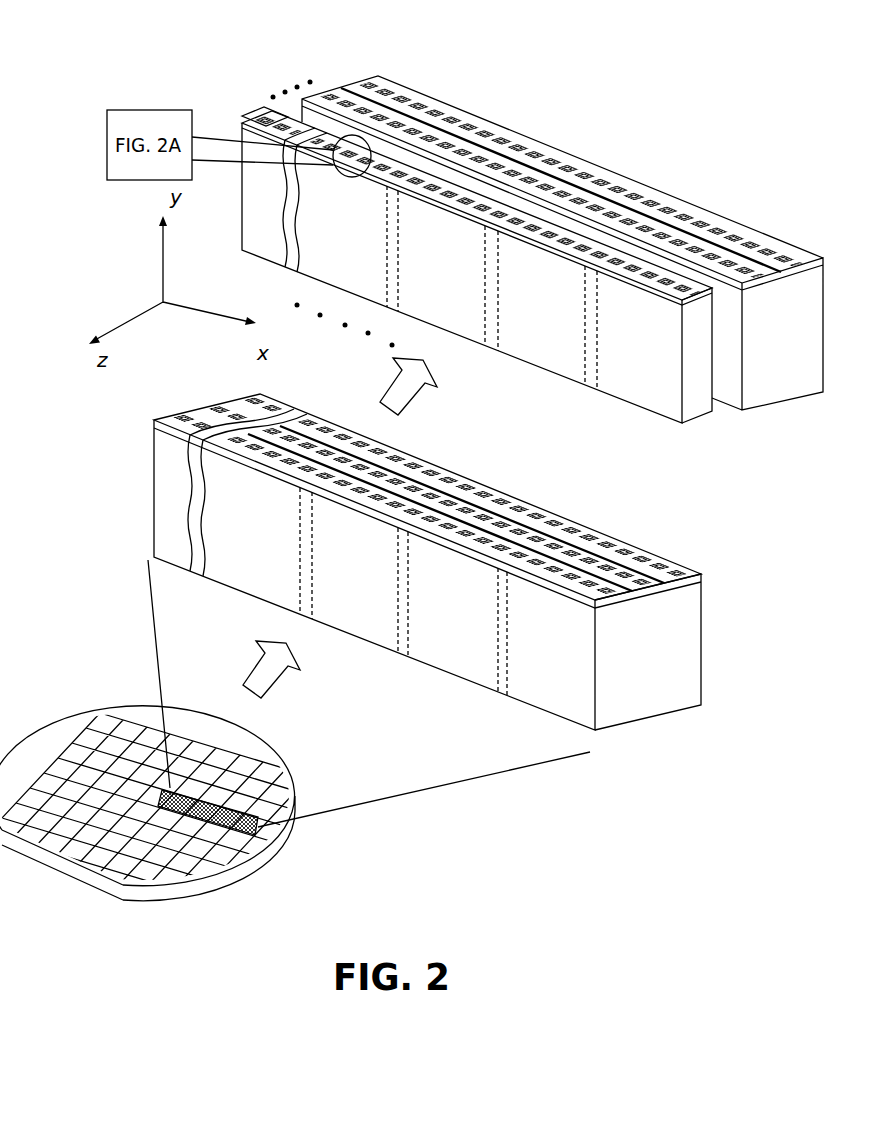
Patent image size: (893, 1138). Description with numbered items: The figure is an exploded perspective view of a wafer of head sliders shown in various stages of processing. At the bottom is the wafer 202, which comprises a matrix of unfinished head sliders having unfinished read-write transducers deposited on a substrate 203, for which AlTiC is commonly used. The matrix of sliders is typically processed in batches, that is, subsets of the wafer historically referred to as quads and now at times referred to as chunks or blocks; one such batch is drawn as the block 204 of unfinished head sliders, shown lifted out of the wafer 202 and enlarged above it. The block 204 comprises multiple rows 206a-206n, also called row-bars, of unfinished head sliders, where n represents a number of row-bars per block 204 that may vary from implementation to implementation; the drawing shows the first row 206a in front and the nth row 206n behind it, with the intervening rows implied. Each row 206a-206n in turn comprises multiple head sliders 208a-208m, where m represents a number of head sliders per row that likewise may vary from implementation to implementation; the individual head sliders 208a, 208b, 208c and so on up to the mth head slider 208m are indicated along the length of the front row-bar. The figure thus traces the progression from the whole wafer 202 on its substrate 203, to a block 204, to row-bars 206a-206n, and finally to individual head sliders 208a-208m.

The wafer 202 is at (95, 852).
The substrate 203 is at (32, 752).
The block 204 is at (627, 707).
The row 206a is at (253, 106).
The row 206n is at (376, 77).
The head slider 208a is at (640, 393).
The head slider 208b is at (553, 360).
The head slider 208c is at (470, 343).
The head slider 208m is at (258, 245).